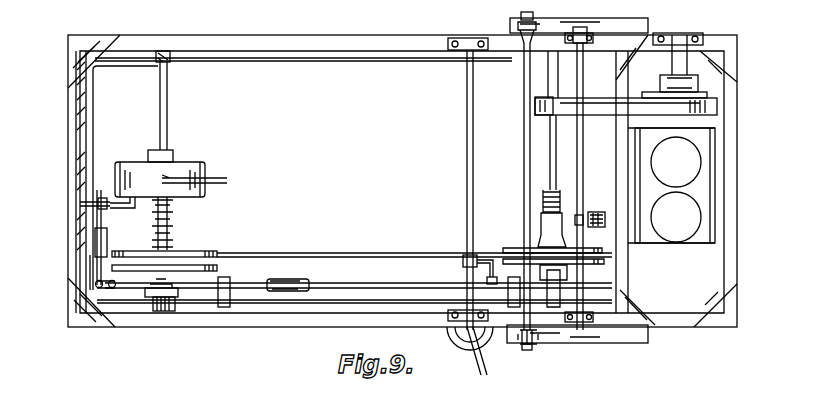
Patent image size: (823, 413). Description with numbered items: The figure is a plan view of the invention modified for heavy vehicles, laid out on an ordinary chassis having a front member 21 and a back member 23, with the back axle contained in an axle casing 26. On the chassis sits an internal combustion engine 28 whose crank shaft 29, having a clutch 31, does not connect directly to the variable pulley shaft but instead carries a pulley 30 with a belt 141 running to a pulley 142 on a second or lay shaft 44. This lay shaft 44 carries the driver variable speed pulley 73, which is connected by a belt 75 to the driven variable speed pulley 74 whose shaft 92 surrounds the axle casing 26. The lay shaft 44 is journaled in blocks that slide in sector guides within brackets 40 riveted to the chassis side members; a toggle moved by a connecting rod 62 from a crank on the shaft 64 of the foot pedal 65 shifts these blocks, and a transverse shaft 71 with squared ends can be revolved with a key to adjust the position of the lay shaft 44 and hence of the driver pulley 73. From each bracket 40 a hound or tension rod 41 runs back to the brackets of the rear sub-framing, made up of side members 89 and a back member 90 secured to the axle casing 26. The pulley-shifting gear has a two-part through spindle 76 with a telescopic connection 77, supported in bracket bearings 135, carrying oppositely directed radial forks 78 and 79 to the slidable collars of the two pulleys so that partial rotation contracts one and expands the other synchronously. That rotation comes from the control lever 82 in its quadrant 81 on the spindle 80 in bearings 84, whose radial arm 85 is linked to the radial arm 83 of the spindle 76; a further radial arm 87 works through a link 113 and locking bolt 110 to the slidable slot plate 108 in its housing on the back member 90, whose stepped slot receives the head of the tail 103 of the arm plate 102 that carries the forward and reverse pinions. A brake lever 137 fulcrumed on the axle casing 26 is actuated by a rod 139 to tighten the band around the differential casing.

The front member 21 is at (735, 185).
The back member 23 is at (83, 143).
The axle casing 26 is at (168, 125).
The internal combustion engine 28 is at (692, 216).
The crank shaft 29 is at (672, 120).
The pulley 30 is at (705, 116).
The clutch 31 is at (667, 82).
The bracket 40 is at (650, 25).
The tension rod 41 is at (368, 60).
The lay shaft 44 is at (549, 158).
The connecting rod 62 is at (572, 25).
The shaft of the foot pedal 64 is at (583, 174).
The foot pedal 65 is at (598, 212).
The transverse shaft 71 is at (523, 131).
The driver variable speed pulley 73 is at (511, 249).
The driven variable speed pulley 74 is at (200, 253).
The belt 75 is at (389, 253).
The spindle 76 is at (366, 286).
The telescopic connection 77 is at (290, 279).
The radial fork 78 is at (568, 280).
The radial fork 79 is at (160, 300).
The spindle 80 is at (467, 107).
The quadrant 81 is at (455, 338).
The control lever 82 is at (484, 360).
The radial arm 83 is at (487, 272).
The bearing 84 is at (458, 38).
The radial arm 85 is at (475, 255).
The radial arm 87 is at (100, 292).
The side member 89 is at (172, 61).
The back member 90 is at (94, 100).
The shaft of the driven variable speed pulley 92 is at (174, 217).
The arm plate 102 is at (112, 209).
The tail 103 is at (80, 205).
The slot plate 108 is at (96, 193).
The locking bolt 110 is at (107, 237).
The link 113 is at (90, 268).
The bracket bearing 135 is at (230, 280).
The lever 137 is at (172, 176).
The rod 139 is at (207, 170).
The belt 141 is at (596, 108).
The pulley 142 is at (537, 100).